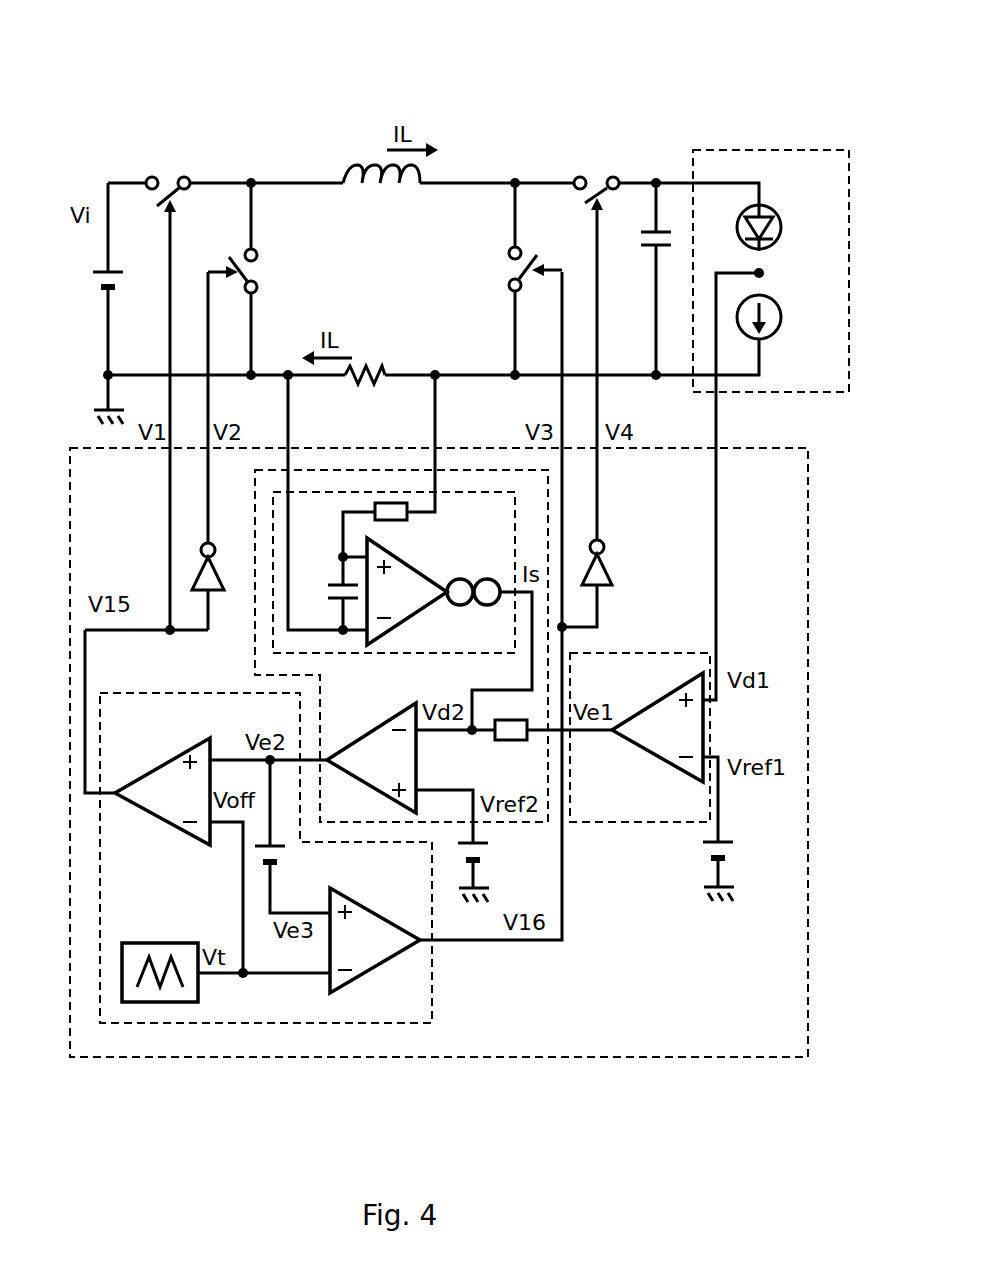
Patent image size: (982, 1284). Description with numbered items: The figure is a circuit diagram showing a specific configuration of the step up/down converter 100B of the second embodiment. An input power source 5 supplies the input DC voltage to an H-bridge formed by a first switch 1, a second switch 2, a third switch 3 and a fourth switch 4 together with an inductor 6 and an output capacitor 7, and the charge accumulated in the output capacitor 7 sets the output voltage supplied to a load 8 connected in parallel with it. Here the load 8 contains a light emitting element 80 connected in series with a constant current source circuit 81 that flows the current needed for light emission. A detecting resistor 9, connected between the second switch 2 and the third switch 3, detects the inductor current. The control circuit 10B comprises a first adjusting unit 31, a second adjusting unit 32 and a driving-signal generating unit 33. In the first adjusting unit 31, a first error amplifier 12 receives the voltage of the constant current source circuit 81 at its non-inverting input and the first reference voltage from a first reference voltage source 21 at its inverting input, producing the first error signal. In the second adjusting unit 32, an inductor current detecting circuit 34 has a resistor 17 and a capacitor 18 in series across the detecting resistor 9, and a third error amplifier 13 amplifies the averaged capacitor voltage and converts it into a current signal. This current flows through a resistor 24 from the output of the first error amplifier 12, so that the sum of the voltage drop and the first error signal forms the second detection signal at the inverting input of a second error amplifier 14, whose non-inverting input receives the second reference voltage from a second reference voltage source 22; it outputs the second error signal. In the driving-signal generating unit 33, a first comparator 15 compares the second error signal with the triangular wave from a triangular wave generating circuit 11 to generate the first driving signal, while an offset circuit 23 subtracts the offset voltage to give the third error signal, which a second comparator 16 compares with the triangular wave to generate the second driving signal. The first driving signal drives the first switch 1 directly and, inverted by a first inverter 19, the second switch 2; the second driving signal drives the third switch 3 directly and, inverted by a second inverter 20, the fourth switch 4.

The step up/down converter 100B is at (454, 75).
The first switch 1 is at (165, 175).
The second switch 2 is at (260, 272).
The third switch 3 is at (510, 270).
The fourth switch 4 is at (596, 172).
The input power source 5 is at (98, 281).
The inductor 6 is at (368, 172).
The output capacitor 7 is at (640, 244).
The load 8 is at (782, 150).
The light emitting element 80 is at (781, 215).
The constant current source circuit 81 is at (781, 325).
The detecting resistor 9 is at (364, 368).
The control circuit 10B is at (808, 641).
The triangular wave generating circuit 11 is at (162, 942).
The first error amplifier 12 is at (637, 747).
The third error amplifier 13 is at (400, 555).
The second error amplifier 14 is at (342, 742).
The first comparator 15 is at (140, 772).
The second comparator 16 is at (398, 957).
The resistor 17 is at (395, 532).
The capacitor 18 is at (326, 588).
The first inverter 19 is at (223, 575).
The second inverter 20 is at (611, 566).
The first reference voltage source 21 is at (728, 846).
The second reference voltage source 22 is at (484, 851).
The offset circuit 23 is at (283, 858).
The resistor 24 is at (505, 740).
The first adjusting unit 31 is at (646, 653).
The second adjusting unit 32 is at (253, 657).
The driving-signal generating unit 33 is at (440, 1000).
The inductor current detecting circuit 34 is at (408, 655).